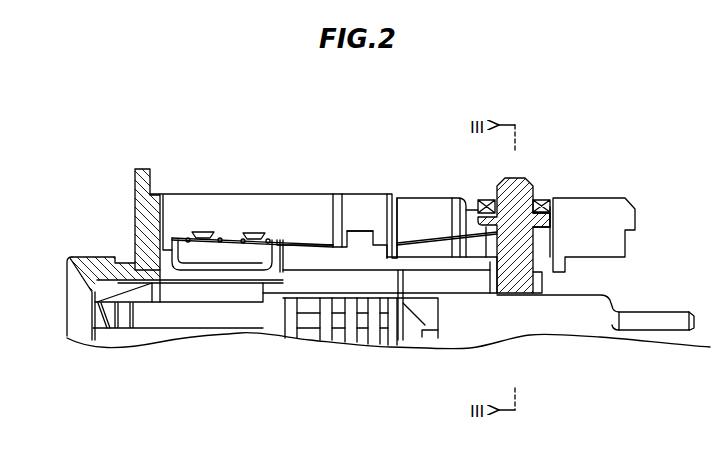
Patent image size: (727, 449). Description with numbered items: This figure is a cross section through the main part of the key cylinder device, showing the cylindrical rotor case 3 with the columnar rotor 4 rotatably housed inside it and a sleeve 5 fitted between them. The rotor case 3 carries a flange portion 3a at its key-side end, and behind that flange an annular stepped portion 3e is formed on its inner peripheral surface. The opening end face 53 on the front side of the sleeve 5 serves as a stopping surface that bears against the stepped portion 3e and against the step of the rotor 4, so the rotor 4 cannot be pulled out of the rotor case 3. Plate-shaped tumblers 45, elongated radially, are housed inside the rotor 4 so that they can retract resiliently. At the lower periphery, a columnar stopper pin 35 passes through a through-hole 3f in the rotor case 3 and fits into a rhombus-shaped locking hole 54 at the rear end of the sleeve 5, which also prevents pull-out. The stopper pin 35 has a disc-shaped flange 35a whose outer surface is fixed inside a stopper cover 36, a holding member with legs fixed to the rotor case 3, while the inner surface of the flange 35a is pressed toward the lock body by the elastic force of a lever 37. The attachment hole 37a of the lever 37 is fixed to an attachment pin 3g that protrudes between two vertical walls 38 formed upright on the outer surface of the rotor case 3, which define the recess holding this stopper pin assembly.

The rotor case 3 is at (190, 193).
The flange portion 3a is at (140, 175).
The annular stepped portion 3e is at (273, 258).
The through-hole 3f is at (492, 270).
The attachment pin 3g is at (358, 235).
The rotor 4 is at (468, 318).
The sleeve 5 is at (437, 282).
The stopper pin 35 is at (526, 180).
The flange 35a is at (545, 220).
The stopper cover 36 is at (488, 200).
The lever 37 is at (315, 240).
The attachment hole 37a is at (376, 193).
The vertical walls 38 is at (607, 208).
The tumblers 45 is at (315, 330).
The opening end face 53 is at (255, 290).
The locking hole 54 is at (537, 292).